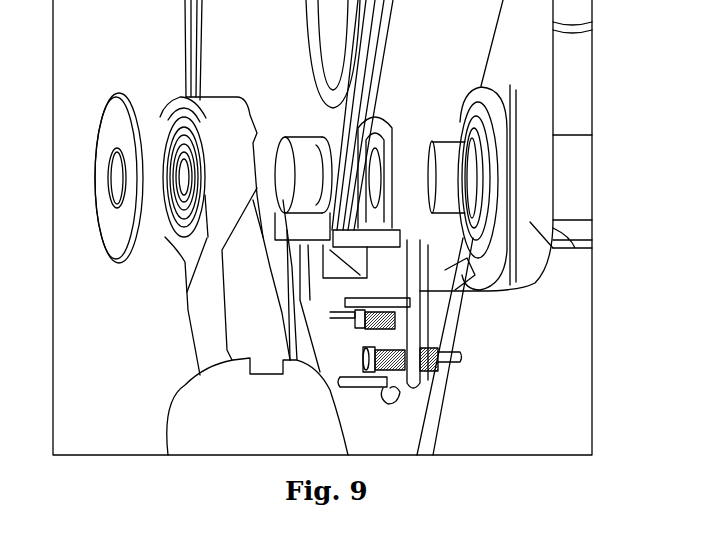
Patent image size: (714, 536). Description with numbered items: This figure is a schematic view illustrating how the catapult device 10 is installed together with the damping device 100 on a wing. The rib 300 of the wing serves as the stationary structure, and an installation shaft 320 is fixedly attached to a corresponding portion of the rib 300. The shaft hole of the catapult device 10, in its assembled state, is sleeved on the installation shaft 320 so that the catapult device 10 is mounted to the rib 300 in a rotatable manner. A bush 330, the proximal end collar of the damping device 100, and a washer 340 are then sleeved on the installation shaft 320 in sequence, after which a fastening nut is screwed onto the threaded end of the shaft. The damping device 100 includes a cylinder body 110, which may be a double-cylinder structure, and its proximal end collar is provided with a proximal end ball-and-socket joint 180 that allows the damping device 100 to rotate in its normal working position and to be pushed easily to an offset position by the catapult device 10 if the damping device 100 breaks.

The catapult device 10 is at (424, 392).
The damping device 100 is at (175, 388).
The cylinder body 110 is at (313, 434).
The proximal end ball-and-socket joint 180 is at (176, 102).
The rib 300 is at (533, 305).
The installation shaft 320 is at (421, 165).
The bush 330 is at (310, 148).
The washer 340 is at (100, 120).